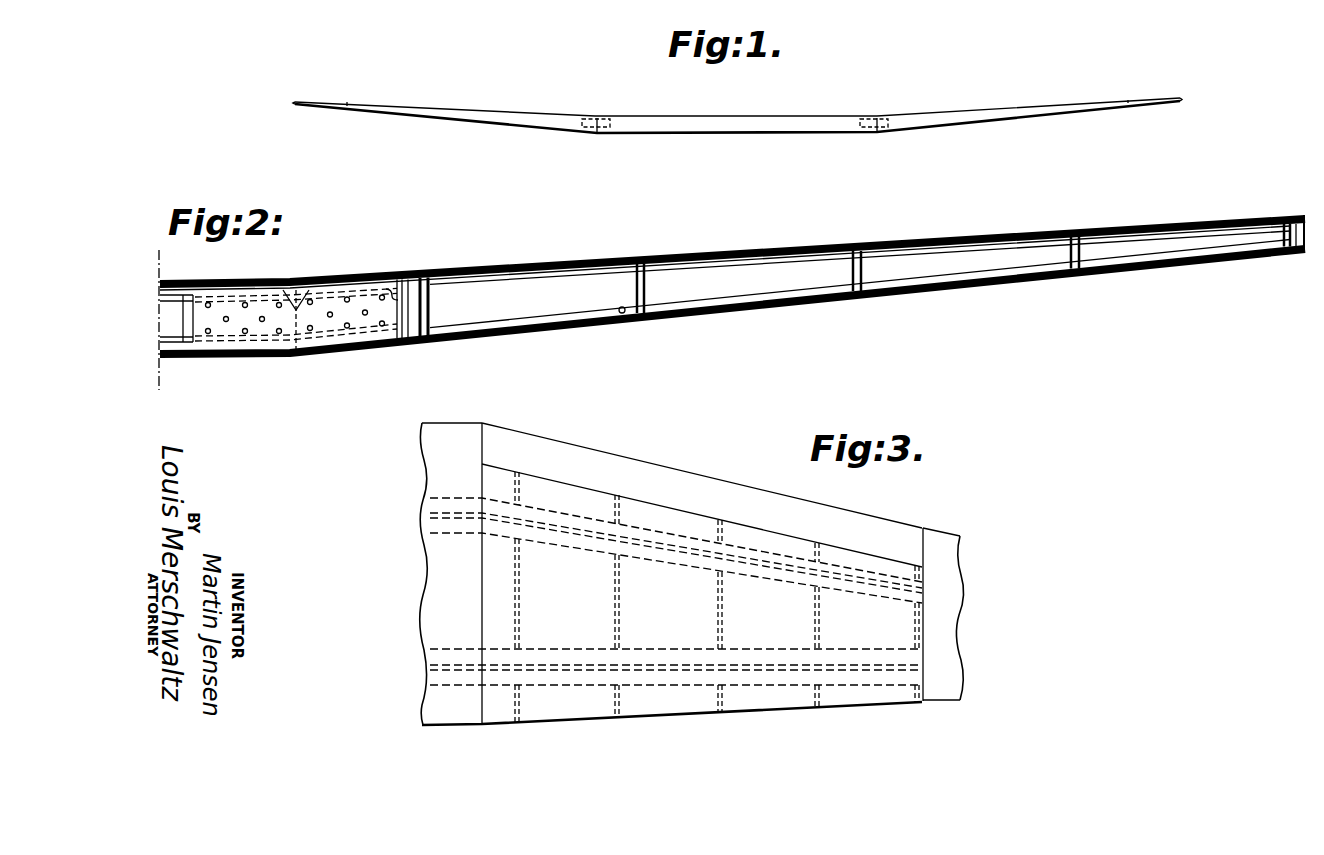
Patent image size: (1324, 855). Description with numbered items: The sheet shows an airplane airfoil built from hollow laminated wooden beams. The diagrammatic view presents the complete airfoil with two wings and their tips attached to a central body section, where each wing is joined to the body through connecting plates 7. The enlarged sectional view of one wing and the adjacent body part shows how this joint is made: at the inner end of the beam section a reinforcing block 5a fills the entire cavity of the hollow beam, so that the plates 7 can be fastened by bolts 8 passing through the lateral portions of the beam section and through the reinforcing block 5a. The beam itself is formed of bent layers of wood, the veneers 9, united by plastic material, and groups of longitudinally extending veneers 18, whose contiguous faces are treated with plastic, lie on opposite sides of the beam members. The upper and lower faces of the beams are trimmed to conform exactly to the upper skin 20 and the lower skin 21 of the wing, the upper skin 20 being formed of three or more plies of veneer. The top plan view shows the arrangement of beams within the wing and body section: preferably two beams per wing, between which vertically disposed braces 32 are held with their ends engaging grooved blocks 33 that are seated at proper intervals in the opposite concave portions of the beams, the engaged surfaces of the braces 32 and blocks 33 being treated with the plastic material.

In FIG. 2, the reinforcing block 5a is at (412, 354).
In FIG. 1, the plates 7 is at (605, 122).
In FIG. 2, the plates 7 is at (362, 302).
In FIG. 2, the bolts 8 is at (295, 341).
In FIG. 2, the veneers 9 is at (773, 283).
In FIG. 2, the longitudinally extending veneers 18 is at (710, 260).
In FIG. 3, the longitudinally extending veneers 18 is at (573, 520).
In FIG. 2, the upper skin 20 is at (608, 263).
In FIG. 2, the lower skin 21 is at (663, 314).
In FIG. 2, the vertically disposed braces 32 is at (429, 300).
In FIG. 3, the vertically disposed braces 32 is at (519, 490).
In FIG. 2, the grooved blocks 33 is at (431, 318).